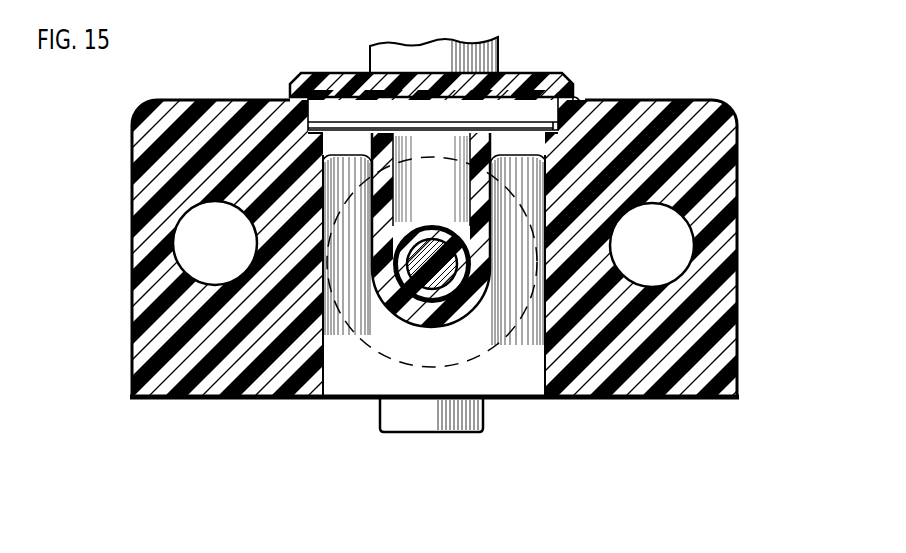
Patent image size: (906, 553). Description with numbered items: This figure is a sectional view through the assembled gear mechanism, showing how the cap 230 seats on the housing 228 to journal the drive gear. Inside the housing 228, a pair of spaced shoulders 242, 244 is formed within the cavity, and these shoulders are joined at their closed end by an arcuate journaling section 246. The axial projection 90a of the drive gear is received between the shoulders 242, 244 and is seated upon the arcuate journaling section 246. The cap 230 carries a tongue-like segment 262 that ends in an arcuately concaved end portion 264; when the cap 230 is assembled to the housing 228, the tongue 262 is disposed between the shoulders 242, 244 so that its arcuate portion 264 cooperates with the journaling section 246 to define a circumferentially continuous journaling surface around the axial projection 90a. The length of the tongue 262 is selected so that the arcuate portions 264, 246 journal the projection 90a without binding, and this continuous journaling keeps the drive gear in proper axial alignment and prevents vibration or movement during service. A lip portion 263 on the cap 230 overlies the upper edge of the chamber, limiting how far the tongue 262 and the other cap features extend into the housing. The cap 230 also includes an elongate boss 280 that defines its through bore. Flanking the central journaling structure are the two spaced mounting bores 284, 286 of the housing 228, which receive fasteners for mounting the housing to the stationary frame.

The housing 228 is at (165, 108).
The cap 230 is at (545, 72).
The elongate boss 280 is at (432, 42).
The lip portion 263 is at (578, 102).
The mounting bore 284 is at (180, 275).
The mounting bore 286 is at (688, 252).
The shoulder 242 is at (376, 218).
The arcuately concaved end portion 264 is at (487, 244).
The shoulder 244 is at (460, 238).
The tongue-like segment 262 is at (444, 198).
The arcuate journaling section 246 is at (420, 316).
The axial projection 90a is at (452, 290).